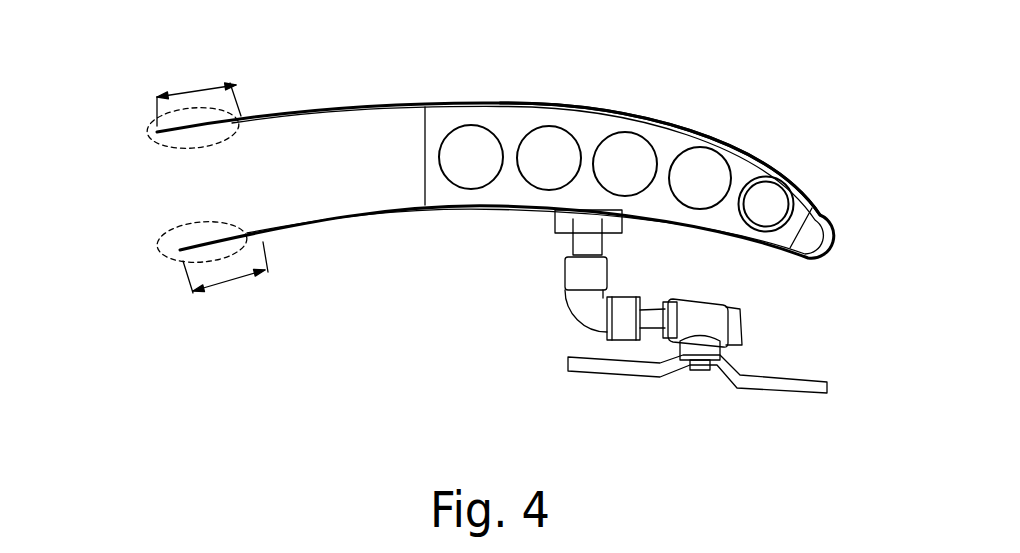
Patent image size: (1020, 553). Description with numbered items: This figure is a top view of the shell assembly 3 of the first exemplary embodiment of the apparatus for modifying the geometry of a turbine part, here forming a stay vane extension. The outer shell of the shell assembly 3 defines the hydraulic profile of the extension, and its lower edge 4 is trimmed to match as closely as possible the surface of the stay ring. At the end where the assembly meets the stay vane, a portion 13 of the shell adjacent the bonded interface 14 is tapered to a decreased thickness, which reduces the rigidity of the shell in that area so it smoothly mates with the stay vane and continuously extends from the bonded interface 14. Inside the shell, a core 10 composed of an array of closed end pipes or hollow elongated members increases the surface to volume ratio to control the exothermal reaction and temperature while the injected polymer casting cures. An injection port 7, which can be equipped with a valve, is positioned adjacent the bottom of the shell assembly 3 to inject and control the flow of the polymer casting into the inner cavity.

The shell assembly 3 is at (385, 222).
The lower edge 4 is at (665, 152).
The injection port 7 is at (612, 386).
The core 10 is at (474, 118).
The portion of the shell having decreased thickness 13 is at (138, 138).
The bonded interface 14 is at (212, 188).